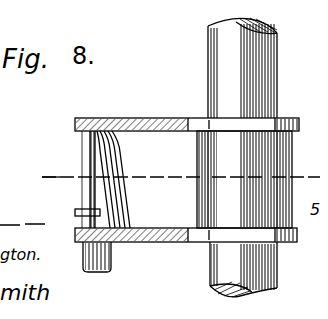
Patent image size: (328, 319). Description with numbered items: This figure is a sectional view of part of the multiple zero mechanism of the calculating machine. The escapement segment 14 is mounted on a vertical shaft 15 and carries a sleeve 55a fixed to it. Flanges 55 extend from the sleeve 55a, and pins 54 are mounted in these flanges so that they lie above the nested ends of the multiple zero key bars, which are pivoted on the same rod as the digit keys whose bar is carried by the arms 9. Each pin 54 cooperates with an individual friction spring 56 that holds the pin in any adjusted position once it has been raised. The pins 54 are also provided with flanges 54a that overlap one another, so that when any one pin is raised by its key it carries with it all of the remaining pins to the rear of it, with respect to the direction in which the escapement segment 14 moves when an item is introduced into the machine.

The arms 9 is at (177, 179).
The escapement segment 14 is at (185, 243).
The vertical shaft 15 is at (276, 104).
The pins 54 is at (112, 258).
The flanges 54a is at (75, 212).
The flanges 55 is at (157, 118).
The sleeve 55a is at (244, 179).
The friction springs 56 is at (162, 221).